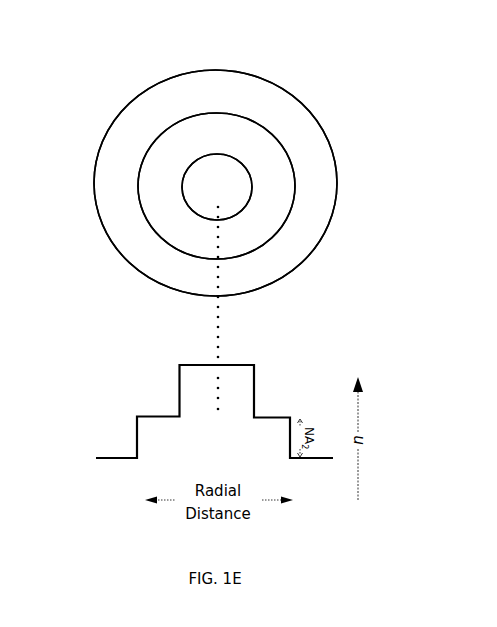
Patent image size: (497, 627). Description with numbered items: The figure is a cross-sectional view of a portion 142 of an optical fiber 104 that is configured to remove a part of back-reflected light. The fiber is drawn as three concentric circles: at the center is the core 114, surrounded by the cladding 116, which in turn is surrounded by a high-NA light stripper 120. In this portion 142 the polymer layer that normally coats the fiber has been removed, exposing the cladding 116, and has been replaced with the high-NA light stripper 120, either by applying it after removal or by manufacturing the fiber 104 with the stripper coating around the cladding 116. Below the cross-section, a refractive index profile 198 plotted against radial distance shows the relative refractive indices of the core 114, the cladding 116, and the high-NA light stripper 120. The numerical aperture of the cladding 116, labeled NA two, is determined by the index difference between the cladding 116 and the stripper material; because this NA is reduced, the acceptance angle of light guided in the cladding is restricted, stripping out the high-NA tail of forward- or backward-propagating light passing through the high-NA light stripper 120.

The optical fiber 104 is at (180, 80).
The portion 142 is at (93, 162).
The high-NA light stripper 120 is at (205, 106).
The cladding 116 is at (205, 142).
The core 114 is at (203, 194).
The refractive index profile 198 is at (255, 405).